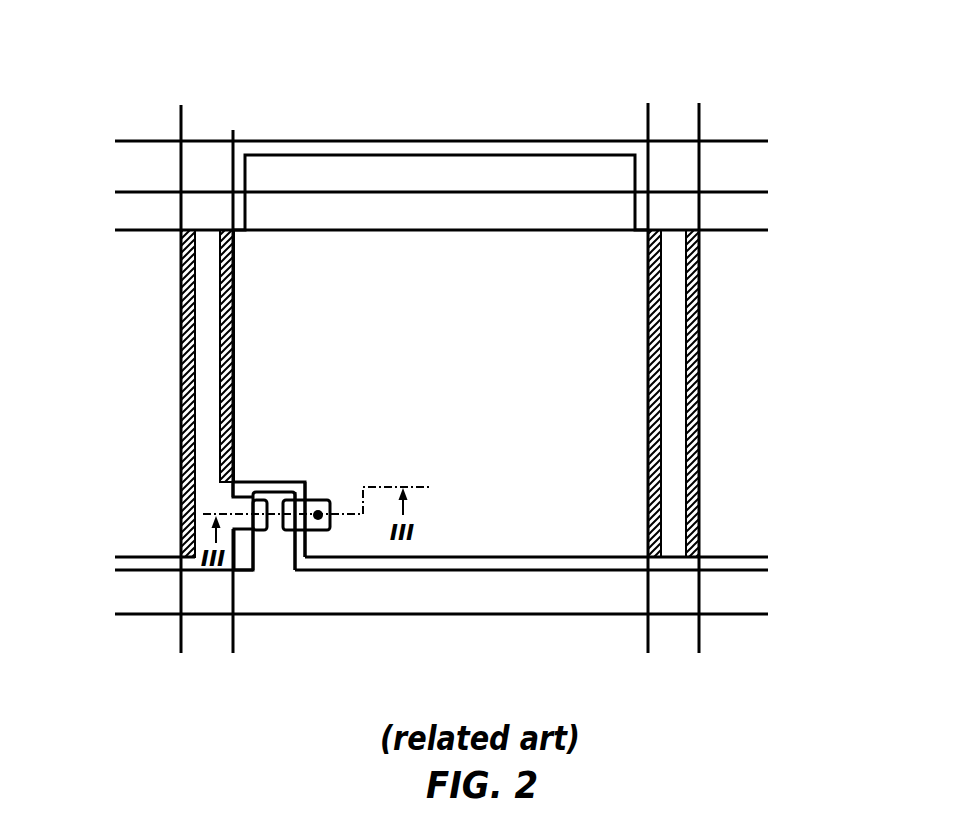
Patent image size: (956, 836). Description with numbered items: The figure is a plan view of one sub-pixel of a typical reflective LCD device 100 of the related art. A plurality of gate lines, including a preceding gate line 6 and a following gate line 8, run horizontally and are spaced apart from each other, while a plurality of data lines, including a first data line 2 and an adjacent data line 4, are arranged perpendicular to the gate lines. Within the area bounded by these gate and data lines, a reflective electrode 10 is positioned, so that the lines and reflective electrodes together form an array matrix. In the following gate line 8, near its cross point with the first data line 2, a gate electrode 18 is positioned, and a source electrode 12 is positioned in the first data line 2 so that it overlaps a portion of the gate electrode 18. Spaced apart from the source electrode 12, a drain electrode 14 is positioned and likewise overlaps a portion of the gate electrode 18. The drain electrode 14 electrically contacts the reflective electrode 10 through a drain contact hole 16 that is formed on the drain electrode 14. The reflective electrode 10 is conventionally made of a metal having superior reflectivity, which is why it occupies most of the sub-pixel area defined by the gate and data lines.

The reflective LCD device 100 is at (293, 61).
The Nth data line 2 is at (200, 122).
The (N+1)th data line 4 is at (672, 117).
The (N−1)th gate line 6 is at (753, 163).
The Nth gate line 8 is at (750, 592).
The reflective electrode 10 is at (445, 222).
The source electrode 12 is at (245, 530).
The drain electrode 14 is at (298, 527).
The drain contact hole 16 is at (318, 515).
The gate electrode 18 is at (275, 548).